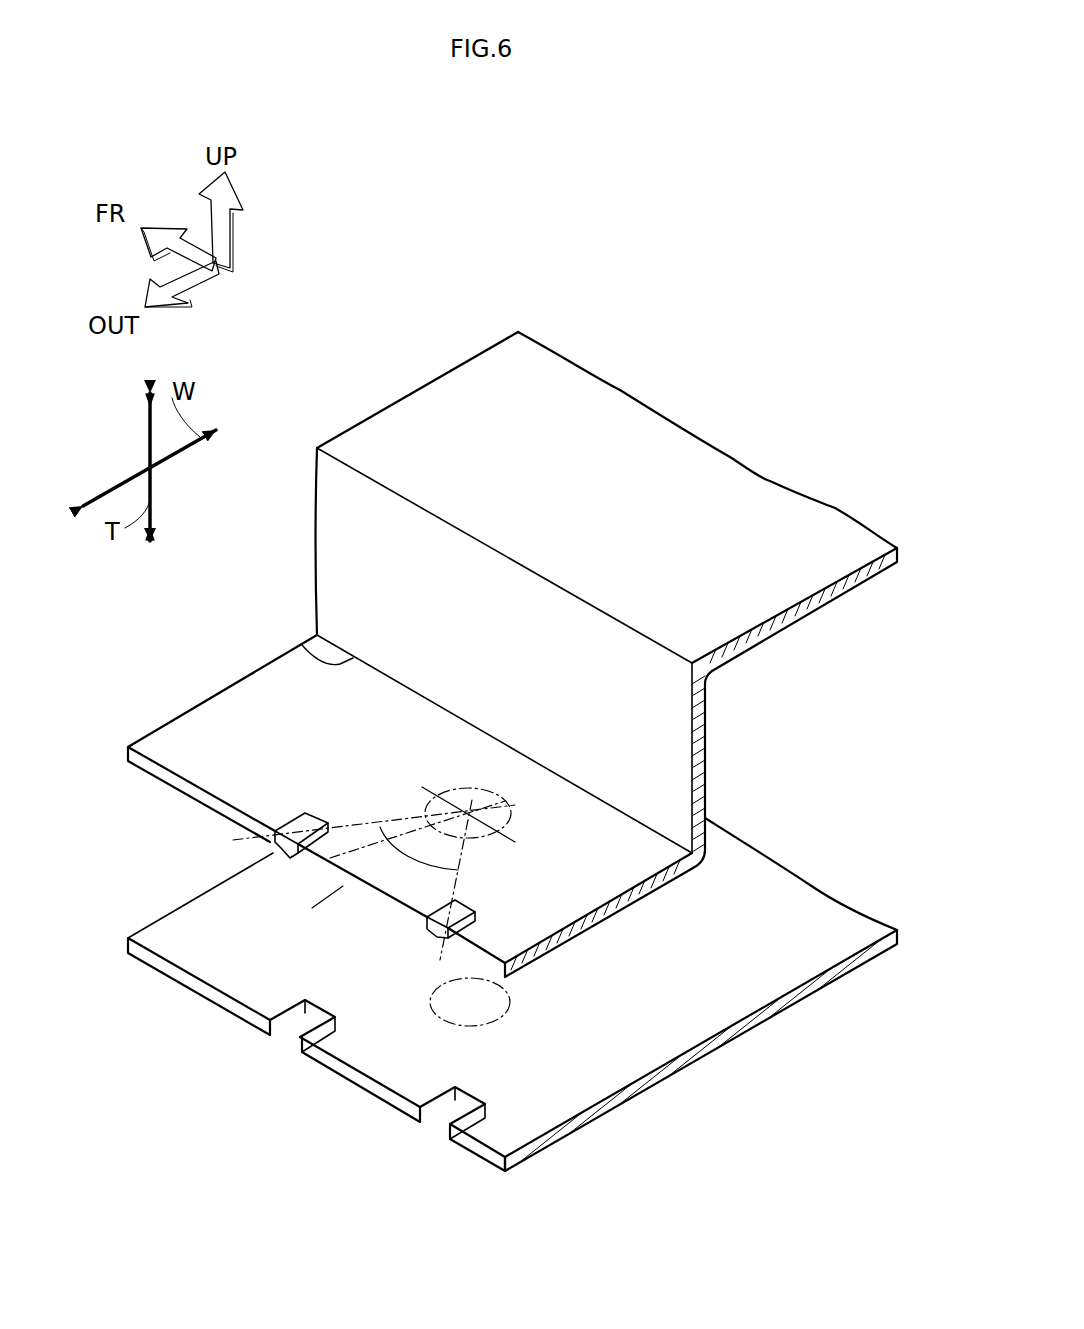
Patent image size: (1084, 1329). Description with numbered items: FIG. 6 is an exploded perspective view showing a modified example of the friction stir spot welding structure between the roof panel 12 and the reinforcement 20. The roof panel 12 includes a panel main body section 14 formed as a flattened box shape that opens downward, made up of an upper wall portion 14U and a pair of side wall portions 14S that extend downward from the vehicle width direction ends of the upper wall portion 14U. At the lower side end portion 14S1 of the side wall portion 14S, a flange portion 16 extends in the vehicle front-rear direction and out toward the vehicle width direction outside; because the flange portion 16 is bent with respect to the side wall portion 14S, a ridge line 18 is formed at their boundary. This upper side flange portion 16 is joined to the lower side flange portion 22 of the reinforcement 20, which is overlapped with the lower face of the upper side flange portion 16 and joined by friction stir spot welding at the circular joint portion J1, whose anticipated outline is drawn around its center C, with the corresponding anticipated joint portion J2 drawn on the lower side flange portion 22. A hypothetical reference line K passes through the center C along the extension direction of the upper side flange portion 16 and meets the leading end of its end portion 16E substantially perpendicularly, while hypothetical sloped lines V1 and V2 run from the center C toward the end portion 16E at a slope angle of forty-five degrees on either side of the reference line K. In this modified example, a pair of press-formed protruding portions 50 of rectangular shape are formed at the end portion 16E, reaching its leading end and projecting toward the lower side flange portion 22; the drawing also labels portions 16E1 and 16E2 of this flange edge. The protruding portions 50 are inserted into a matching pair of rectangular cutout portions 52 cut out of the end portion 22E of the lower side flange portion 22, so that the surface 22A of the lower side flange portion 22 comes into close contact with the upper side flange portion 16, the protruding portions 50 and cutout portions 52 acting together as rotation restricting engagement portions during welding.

The roof panel 12 is at (760, 312).
The panel main body section 14 is at (725, 487).
The upper wall portion 14U is at (805, 520).
The side wall portion 14S is at (340, 545).
The end portion 14S1 is at (345, 598).
The ridge line 18 is at (302, 646).
The upper side flange portion 16 is at (220, 722).
The end portion 16E is at (338, 858).
The first edge portion of flange 16E1 is at (270, 846).
The second edge portion of flange 16E2 is at (448, 945).
The protruding portion 50 is at (300, 826).
The reinforcement 20 is at (840, 1018).
The lower side flange portion 22 is at (688, 1018).
The surface 22A is at (630, 1055).
The end portion 22E is at (357, 1070).
The cutout portion 52 is at (287, 1022).
The center C is at (467, 800).
The joint portion J1 is at (512, 818).
The joint portion J2 is at (508, 1013).
The hypothetical sloped line V1 is at (352, 824).
The hypothetical sloped line V2 is at (455, 862).
The hypothetical reference line K is at (332, 900).